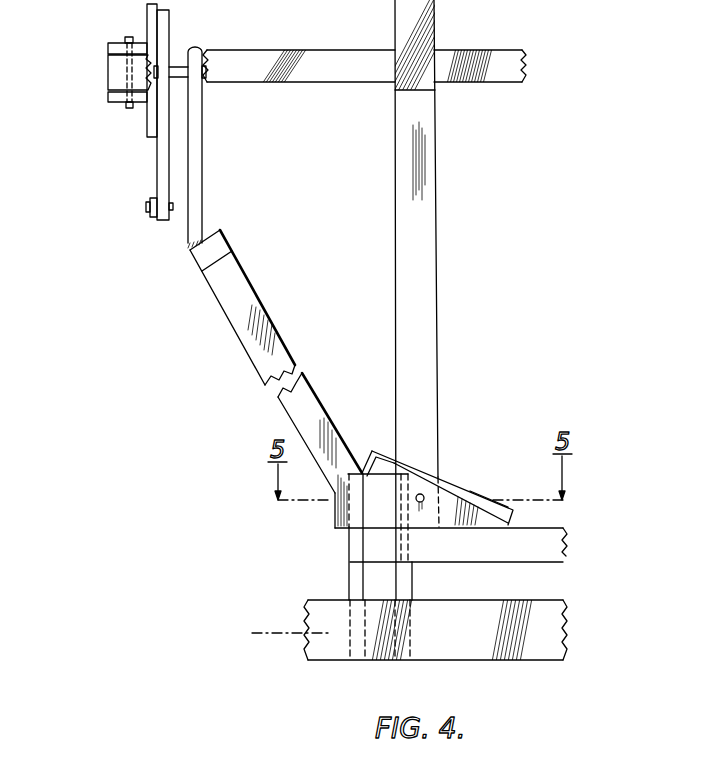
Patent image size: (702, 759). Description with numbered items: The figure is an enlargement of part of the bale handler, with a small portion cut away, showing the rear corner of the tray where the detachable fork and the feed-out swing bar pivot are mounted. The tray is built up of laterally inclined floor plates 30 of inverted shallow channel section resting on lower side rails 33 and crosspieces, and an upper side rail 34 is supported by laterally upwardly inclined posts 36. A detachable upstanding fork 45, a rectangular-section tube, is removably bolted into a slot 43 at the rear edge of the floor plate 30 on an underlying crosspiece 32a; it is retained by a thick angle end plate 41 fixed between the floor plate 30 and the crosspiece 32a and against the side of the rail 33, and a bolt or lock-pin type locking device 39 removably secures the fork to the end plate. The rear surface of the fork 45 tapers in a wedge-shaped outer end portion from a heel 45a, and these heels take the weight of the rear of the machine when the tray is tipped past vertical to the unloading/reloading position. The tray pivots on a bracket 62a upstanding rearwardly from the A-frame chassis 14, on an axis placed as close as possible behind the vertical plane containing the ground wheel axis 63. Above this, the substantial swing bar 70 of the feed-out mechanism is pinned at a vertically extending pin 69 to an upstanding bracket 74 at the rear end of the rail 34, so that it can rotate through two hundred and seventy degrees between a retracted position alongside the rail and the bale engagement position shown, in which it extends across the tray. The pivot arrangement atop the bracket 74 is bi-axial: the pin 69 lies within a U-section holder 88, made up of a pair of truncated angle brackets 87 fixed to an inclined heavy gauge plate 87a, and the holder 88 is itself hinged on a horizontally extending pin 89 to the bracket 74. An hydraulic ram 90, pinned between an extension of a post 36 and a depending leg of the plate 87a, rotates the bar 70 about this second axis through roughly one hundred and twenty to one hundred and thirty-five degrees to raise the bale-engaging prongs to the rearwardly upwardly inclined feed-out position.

The A-frame chassis 14 is at (385, 662).
The floor plate 30 is at (452, 478).
The crosspiece 32a is at (523, 550).
The lower side rail 33 is at (375, 508).
The upper side rail 34 is at (215, 250).
The post 36 is at (253, 335).
The locking device 39 is at (421, 494).
The angle end plate 41 is at (472, 506).
The slot 43 is at (400, 460).
The fork 45 is at (408, 162).
The heel 45a is at (428, 92).
The bracket 62a is at (350, 573).
The ground wheel axis 63 is at (300, 633).
The pin 69 is at (129, 37).
The swing bar 70 is at (312, 62).
The bracket 74 is at (197, 175).
The truncated angle bracket 87 is at (108, 46).
The inclined heavy gauge plate 87a is at (165, 37).
The U-section holder 88 is at (150, 148).
The pin 89 is at (172, 78).
The hydraulic ram 90 is at (150, 214).